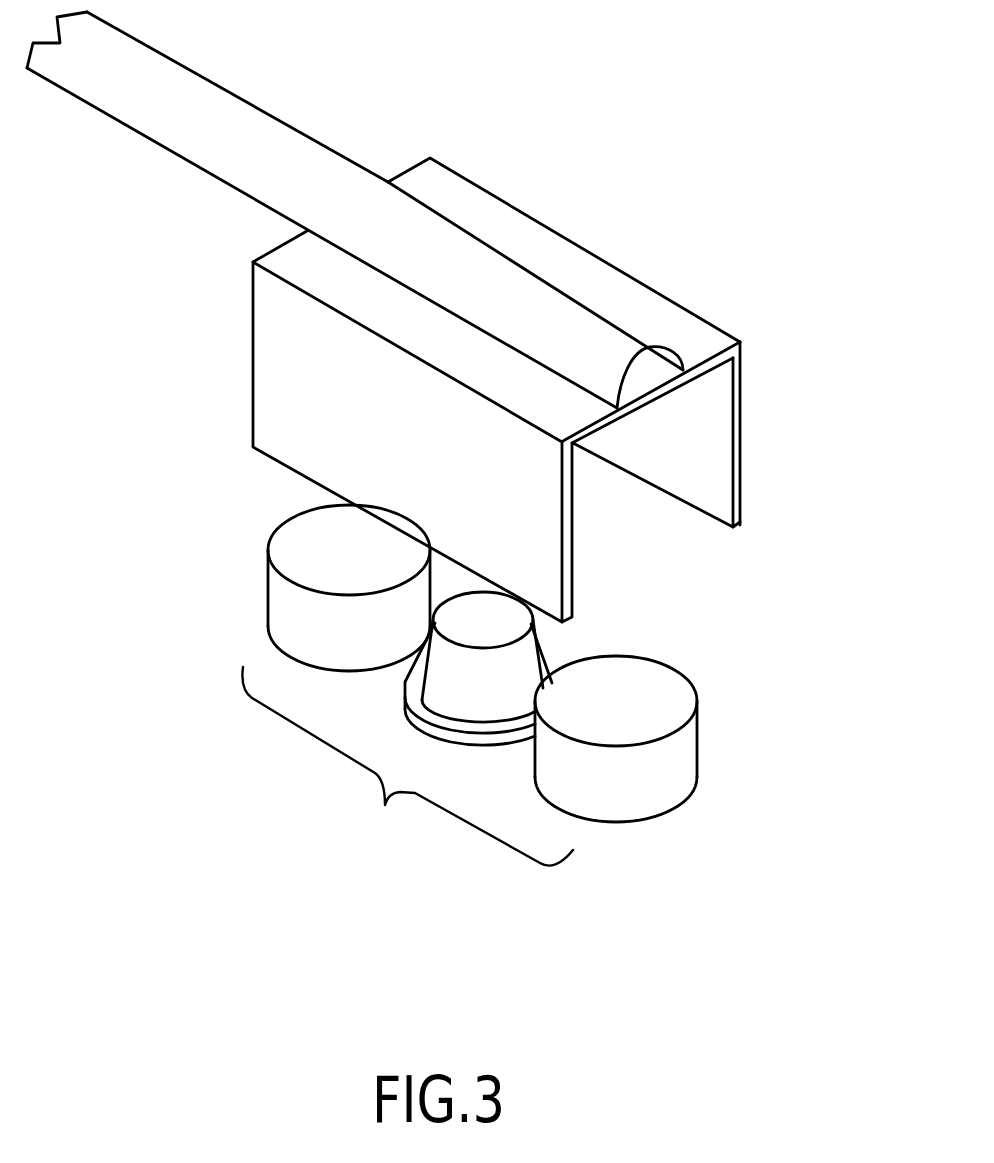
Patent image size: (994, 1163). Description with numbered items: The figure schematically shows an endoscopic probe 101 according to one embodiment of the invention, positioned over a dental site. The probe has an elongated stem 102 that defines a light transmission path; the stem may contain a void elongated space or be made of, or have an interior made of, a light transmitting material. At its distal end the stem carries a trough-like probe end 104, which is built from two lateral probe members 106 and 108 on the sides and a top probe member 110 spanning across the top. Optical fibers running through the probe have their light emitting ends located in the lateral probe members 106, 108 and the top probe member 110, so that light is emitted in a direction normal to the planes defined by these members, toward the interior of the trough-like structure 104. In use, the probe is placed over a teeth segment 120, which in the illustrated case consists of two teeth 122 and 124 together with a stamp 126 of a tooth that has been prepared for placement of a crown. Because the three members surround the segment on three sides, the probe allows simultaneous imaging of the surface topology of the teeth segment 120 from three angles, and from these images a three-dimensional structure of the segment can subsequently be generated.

The endoscopic probe 101 is at (693, 233).
The stem 102 is at (170, 78).
The trough-like probe end 104 is at (737, 487).
The lateral probe member 106 is at (700, 400).
The lateral probe member 108 is at (290, 377).
The top probe member 110 is at (688, 330).
The teeth segment 120 is at (497, 685).
The tooth 122 is at (280, 598).
The tooth 124 is at (667, 765).
The stamp 126 is at (537, 652).